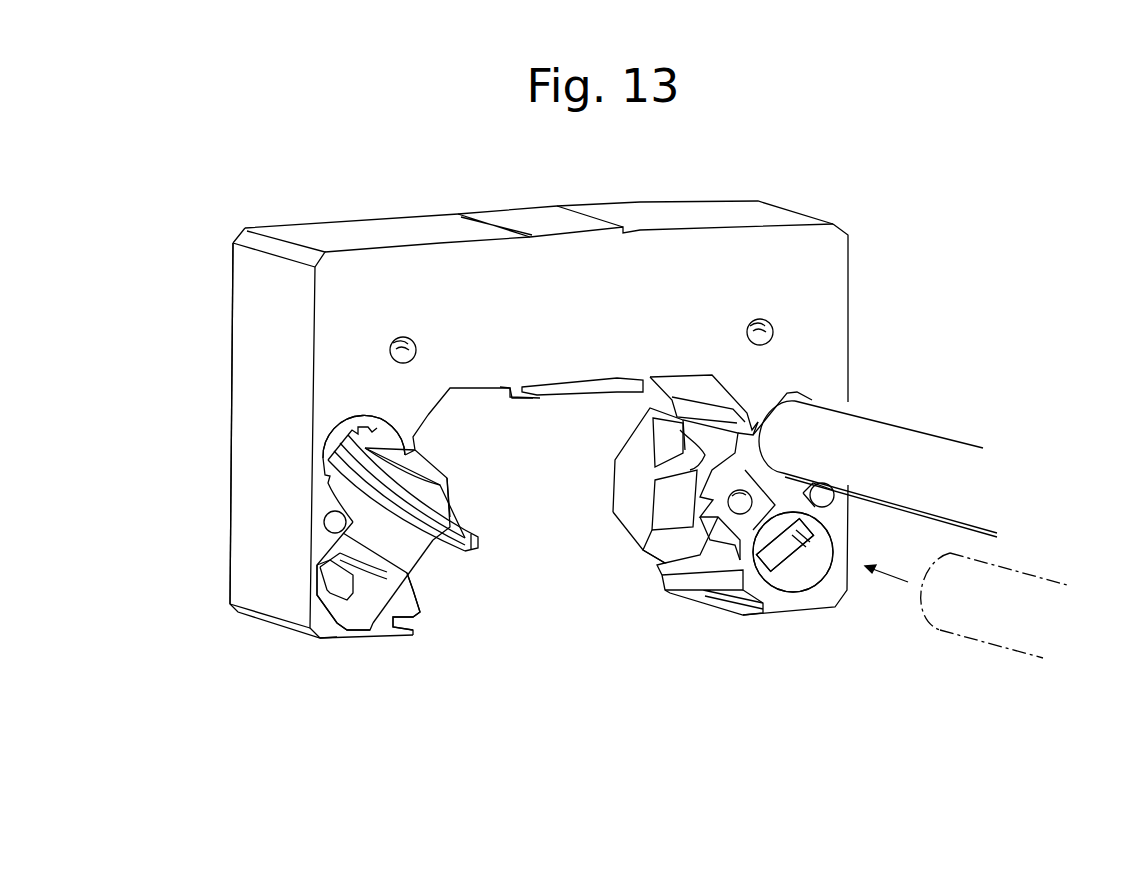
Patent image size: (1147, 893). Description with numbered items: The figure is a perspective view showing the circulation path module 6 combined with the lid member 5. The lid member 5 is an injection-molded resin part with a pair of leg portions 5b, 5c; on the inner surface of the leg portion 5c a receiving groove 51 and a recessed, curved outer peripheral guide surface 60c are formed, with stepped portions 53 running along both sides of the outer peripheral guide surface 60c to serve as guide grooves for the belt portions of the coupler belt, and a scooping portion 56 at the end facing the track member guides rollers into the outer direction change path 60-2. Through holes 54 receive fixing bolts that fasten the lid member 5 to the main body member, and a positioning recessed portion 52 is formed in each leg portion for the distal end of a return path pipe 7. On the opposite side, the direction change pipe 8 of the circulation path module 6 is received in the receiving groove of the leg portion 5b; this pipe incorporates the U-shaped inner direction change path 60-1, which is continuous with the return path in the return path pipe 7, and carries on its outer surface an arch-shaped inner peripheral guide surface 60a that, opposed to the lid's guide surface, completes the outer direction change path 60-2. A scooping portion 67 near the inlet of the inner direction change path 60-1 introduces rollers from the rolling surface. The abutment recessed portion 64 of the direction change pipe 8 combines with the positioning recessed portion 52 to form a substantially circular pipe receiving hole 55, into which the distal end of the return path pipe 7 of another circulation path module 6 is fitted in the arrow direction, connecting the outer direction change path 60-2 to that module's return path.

The lid member 5 is at (832, 190).
The leg portion 5b is at (710, 607).
The leg portion 5c is at (257, 562).
The circulation path module 6 is at (907, 422).
The return path pipe 7 is at (975, 462).
The direction change pipe 8 is at (753, 470).
The receiving groove 51 is at (368, 605).
The positioning recessed portion 52 is at (333, 445).
The stepped portions 53 is at (413, 520).
The through hole 54 is at (417, 337).
The pipe receiving hole 55 is at (855, 676).
The scooping portion 56 is at (407, 567).
The inner direction change path 60-1 is at (663, 577).
The outer direction change path 60-2 is at (672, 452).
The inner peripheral guide surface 60a is at (697, 448).
The outer peripheral guide surface 60c is at (413, 555).
The abutment recessed portion 64 is at (777, 580).
The scooping portion 67 is at (693, 545).